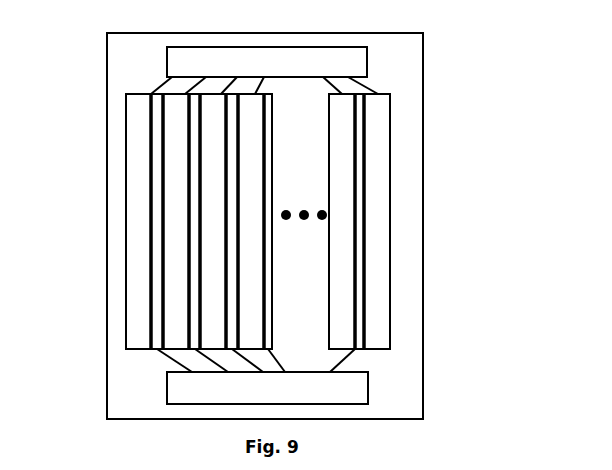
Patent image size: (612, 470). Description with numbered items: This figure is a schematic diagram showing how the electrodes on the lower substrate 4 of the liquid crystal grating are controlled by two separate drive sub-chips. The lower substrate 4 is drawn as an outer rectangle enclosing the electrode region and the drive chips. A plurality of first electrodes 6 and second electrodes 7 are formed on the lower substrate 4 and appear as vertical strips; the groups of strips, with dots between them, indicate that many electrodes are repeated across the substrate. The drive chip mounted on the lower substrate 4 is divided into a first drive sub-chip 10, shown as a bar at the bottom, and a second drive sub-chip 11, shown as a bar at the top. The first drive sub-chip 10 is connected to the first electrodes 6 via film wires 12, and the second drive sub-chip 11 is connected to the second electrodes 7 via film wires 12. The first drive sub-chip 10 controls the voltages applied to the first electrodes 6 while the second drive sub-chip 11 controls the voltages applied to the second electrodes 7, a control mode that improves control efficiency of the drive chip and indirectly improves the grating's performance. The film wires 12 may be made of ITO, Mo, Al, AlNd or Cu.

The lower substrate 4 is at (407, 93).
The first electrodes 6 is at (158, 223).
The second electrodes 7 is at (138, 137).
The first drive sub-chip 10 is at (215, 389).
The second drive sub-chip 11 is at (215, 61).
The film wires 12 is at (340, 363).